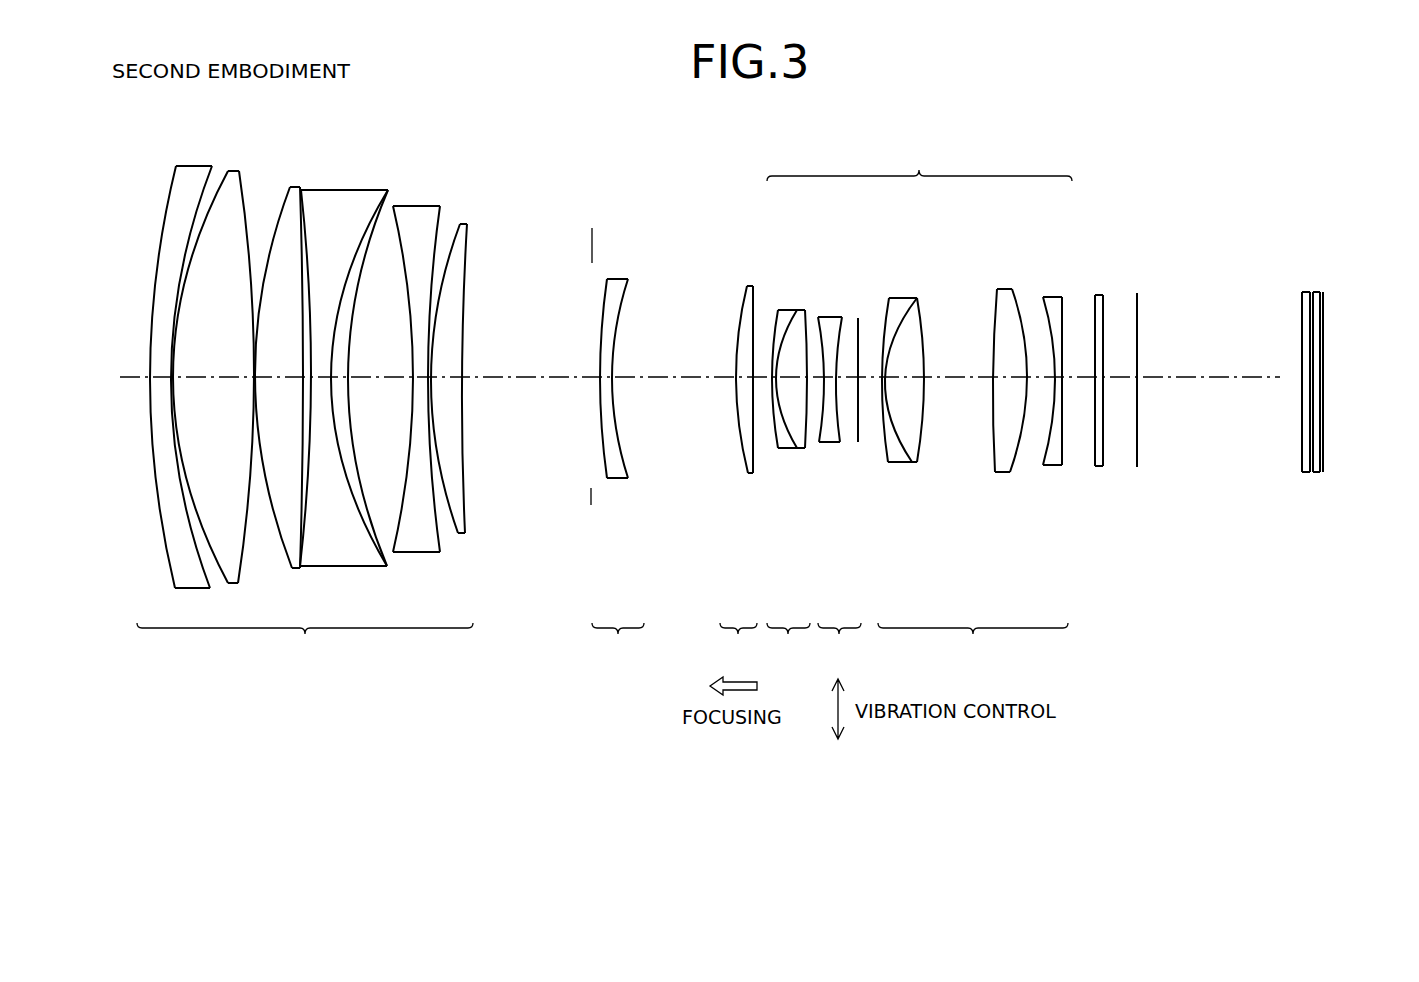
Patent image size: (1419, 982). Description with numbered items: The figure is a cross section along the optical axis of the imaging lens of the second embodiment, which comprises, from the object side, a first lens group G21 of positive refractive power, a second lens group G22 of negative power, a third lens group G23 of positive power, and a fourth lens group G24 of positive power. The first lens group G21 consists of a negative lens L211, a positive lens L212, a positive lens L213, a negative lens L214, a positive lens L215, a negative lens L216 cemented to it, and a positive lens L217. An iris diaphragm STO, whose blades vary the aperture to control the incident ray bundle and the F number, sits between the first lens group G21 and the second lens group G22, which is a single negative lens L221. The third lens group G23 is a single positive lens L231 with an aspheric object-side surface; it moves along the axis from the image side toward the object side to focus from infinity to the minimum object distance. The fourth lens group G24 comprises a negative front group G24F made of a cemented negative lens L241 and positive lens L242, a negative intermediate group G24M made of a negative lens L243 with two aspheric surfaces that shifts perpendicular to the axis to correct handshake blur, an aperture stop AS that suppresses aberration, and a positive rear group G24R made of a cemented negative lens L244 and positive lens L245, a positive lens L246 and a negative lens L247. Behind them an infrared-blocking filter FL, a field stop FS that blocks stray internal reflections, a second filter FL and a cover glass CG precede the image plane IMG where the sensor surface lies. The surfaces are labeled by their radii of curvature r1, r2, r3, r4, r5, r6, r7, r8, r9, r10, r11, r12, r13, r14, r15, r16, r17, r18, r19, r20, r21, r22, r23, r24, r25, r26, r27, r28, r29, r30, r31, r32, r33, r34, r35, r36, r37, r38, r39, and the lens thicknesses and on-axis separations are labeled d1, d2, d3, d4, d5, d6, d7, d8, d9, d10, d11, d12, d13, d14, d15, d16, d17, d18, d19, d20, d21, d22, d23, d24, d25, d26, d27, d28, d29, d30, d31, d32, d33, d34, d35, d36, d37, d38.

The negative lens L211 is at (181, 182).
The positive lens L212 is at (243, 190).
The positive lens L213 is at (290, 227).
The negative lens L214 is at (353, 215).
The positive lens L215 is at (407, 233).
The negative lens L216 is at (437, 217).
The positive lens L217 is at (462, 248).
The negative lens L221 is at (617, 292).
The positive lens L231 is at (742, 300).
The negative lens L241 is at (790, 312).
The positive lens L242 is at (782, 310).
The negative lens L243 is at (831, 318).
The negative lens L244 is at (898, 303).
The positive lens L245 is at (920, 310).
The positive lens L246 is at (997, 297).
The negative lens L247 is at (1055, 307).
The first lens group G21 is at (305, 646).
The second lens group G22 is at (618, 646).
The third lens group G23 is at (738, 646).
The fourth lens group G24 is at (919, 159).
The front group G24F is at (788, 646).
The intermediate group G24M is at (839, 646).
The rear group G24R is at (973, 646).
The iris diaphragm STO is at (587, 355).
The aperture stop AS is at (871, 370).
The filter FL is at (1100, 297).
The field stop FS is at (1138, 297).
The cover glass CG is at (1315, 292).
The image plane IMG is at (1328, 297).
The radius of curvature r1 is at (165, 225).
The radius of curvature r2 is at (202, 190).
The radius of curvature r3 is at (222, 180).
The radius of curvature r4 is at (244, 187).
The radius of curvature r5 is at (273, 237).
The radius of curvature r6 is at (299, 190).
The radius of curvature r7 is at (307, 220).
The radius of curvature r8 is at (362, 247).
The radius of curvature r9 is at (380, 210).
The radius of curvature r10 is at (430, 217).
The radius of curvature r11 is at (438, 220).
The radius of curvature r12 is at (450, 260).
The radius of curvature r13 is at (462, 322).
The iris diaphragm surface r14 is at (592, 263).
The radius of curvature r15 is at (604, 344).
The radius of curvature r16 is at (617, 336).
The radius of curvature r17 is at (737, 362).
The radius of curvature r18 is at (752, 340).
The radius of curvature r19 is at (770, 333).
The radius of curvature r20 is at (785, 315).
The radius of curvature r21 is at (784, 308).
The radius of curvature r22 is at (818, 312).
The radius of curvature r23 is at (845, 315).
The aperture stop surface r24 is at (862, 343).
The radius of curvature r25 is at (881, 297).
The radius of curvature r26 is at (913, 315).
The radius of curvature r27 is at (927, 360).
The radius of curvature r28 is at (993, 323).
The radius of curvature r29 is at (1013, 290).
The radius of curvature r30 is at (1048, 310).
The radius of curvature r31 is at (1067, 300).
The filter surface r32 is at (1095, 353).
The filter surface r33 is at (1105, 353).
The field stop surface r34 is at (1140, 313).
The filter surface r35 is at (1301, 357).
The filter surface r36 is at (1308, 333).
The cover glass surface r37 is at (1311, 302).
The cover glass surface r38 is at (1321, 327).
The image plane surface r39 is at (1324, 357).
The lens thickness d1 is at (159, 378).
The surface distance d2 is at (170, 382).
The lens thickness d3 is at (216, 380).
The surface distance d4 is at (254, 425).
The lens thickness d5 is at (281, 380).
The surface distance d6 is at (297, 570).
The lens thickness d7 is at (321, 381).
The surface distance d8 is at (338, 381).
The lens thickness d9 is at (382, 380).
The lens thickness d10 is at (422, 379).
The surface distance d11 is at (430, 382).
The lens thickness d12 is at (447, 380).
The surface distance d13 is at (530, 380).
The surface distance d14 is at (600, 385).
The lens thickness d15 is at (612, 380).
The surface distance d16 is at (677, 380).
The lens thickness d17 is at (738, 395).
The surface distance d18 is at (768, 392).
The lens thickness d19 is at (775, 382).
The lens thickness d20 is at (793, 382).
The surface distance d21 is at (810, 382).
The lens thickness d22 is at (823, 382).
The surface distance d23 is at (845, 382).
The surface distance d24 is at (880, 382).
The lens thickness d25 is at (887, 382).
The lens thickness d26 is at (907, 383).
The surface distance d27 is at (957, 381).
The lens thickness d28 is at (997, 382).
The surface distance d29 is at (1042, 382).
The lens thickness d30 is at (1053, 382).
The surface distance d31 is at (1078, 381).
The filter thickness d32 is at (1100, 382).
The surface distance d33 is at (1118, 381).
The surface distance d34 is at (1206, 381).
The filter thickness d35 is at (1302, 383).
The surface distance d36 is at (1310, 383).
The cover glass thickness d37 is at (1322, 397).
The surface distance d38 is at (1320, 383).